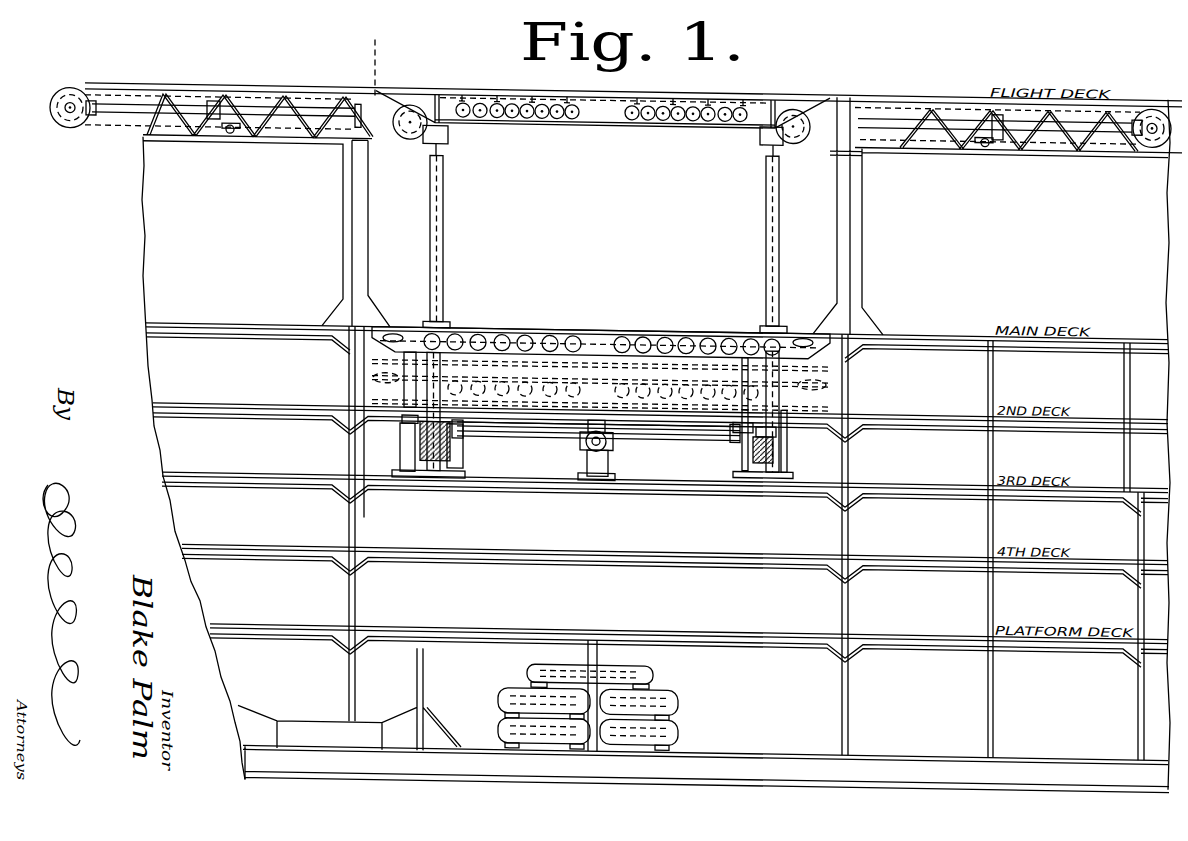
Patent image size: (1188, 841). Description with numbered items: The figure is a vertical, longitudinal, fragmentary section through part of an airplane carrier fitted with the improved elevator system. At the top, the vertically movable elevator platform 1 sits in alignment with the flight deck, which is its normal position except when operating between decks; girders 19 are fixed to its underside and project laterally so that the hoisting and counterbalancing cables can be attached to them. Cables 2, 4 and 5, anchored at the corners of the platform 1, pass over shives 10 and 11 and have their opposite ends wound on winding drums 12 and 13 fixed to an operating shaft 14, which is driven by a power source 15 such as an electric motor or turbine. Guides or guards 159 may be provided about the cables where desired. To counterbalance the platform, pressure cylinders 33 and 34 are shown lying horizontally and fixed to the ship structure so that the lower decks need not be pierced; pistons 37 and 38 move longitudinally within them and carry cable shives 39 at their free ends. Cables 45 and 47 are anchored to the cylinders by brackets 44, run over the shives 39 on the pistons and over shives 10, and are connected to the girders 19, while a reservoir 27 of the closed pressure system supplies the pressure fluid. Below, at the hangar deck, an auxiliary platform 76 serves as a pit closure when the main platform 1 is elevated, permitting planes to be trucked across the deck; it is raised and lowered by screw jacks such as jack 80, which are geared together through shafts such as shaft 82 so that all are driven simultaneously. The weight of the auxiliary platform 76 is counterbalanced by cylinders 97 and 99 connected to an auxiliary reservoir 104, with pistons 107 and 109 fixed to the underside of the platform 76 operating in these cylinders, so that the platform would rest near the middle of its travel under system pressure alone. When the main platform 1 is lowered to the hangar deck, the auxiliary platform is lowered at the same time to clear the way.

The elevator platform 1 is at (623, 88).
The cable 2 is at (362, 62).
The cable 4 is at (440, 204).
The cable 5 is at (440, 214).
The shive 10 is at (405, 146).
The shive 11 is at (410, 422).
The winding drum 12 is at (432, 460).
The winding drum 13 is at (767, 461).
The operating shaft 14 is at (662, 431).
The power source 15 is at (583, 457).
The girder 19 is at (605, 112).
The reservoir 27 is at (667, 728).
The pressure cylinder 33 is at (283, 116).
The pressure cylinder 34 is at (932, 123).
The piston 37 is at (107, 116).
The piston 38 is at (1053, 121).
The cable shive 39 is at (71, 100).
The bracket 44 is at (233, 143).
The cable 45 is at (121, 131).
The cable 47 is at (1103, 131).
The auxiliary platform 76 is at (572, 327).
The screw jack 80 is at (735, 370).
The shaft 82 is at (708, 425).
The cylinder 97 is at (407, 447).
The cylinder 99 is at (768, 426).
The auxiliary reservoir 104 is at (647, 676).
The piston 107 is at (407, 388).
The piston 109 is at (783, 364).
The guide 159 is at (440, 269).